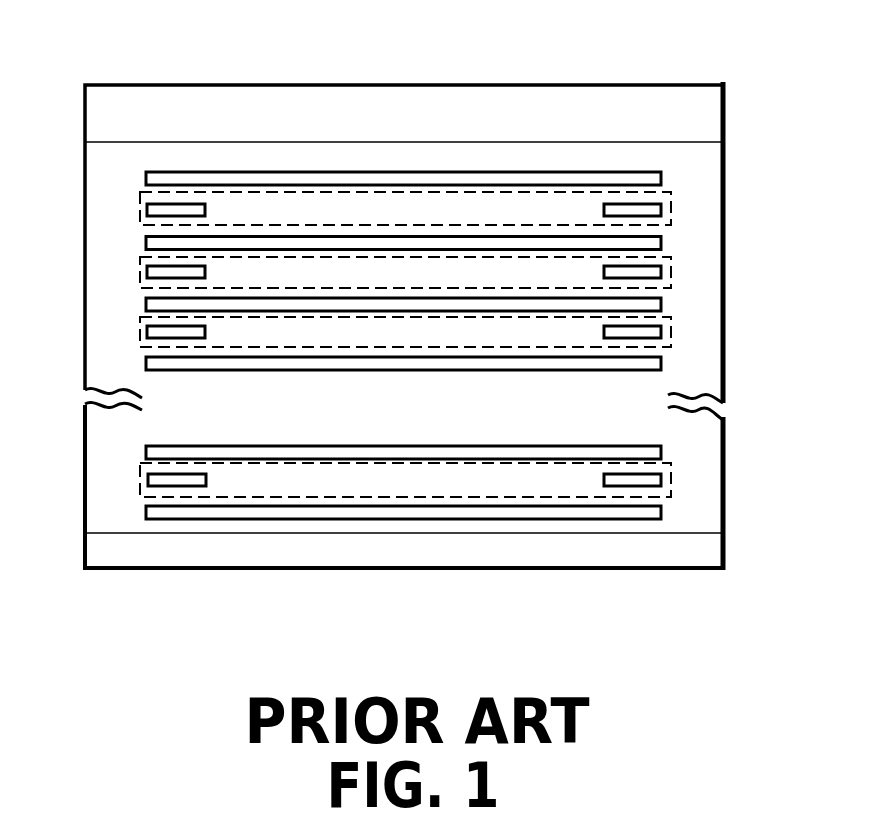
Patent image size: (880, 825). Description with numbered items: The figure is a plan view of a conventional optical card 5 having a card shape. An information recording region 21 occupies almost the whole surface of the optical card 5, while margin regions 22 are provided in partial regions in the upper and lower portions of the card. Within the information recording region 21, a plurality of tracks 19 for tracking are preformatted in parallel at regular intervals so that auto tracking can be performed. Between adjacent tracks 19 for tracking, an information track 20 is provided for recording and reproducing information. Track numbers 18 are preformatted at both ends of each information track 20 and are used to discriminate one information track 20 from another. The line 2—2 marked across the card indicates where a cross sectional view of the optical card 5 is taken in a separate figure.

The line 2— 2 is at (450, 78).
The optical card 5 is at (593, 84).
The track numbers 18 is at (146, 208).
The tracks for tracking 19 is at (145, 174).
The information track 20 is at (671, 203).
The information recording region 21 is at (700, 170).
The margin regions 22 is at (700, 113).